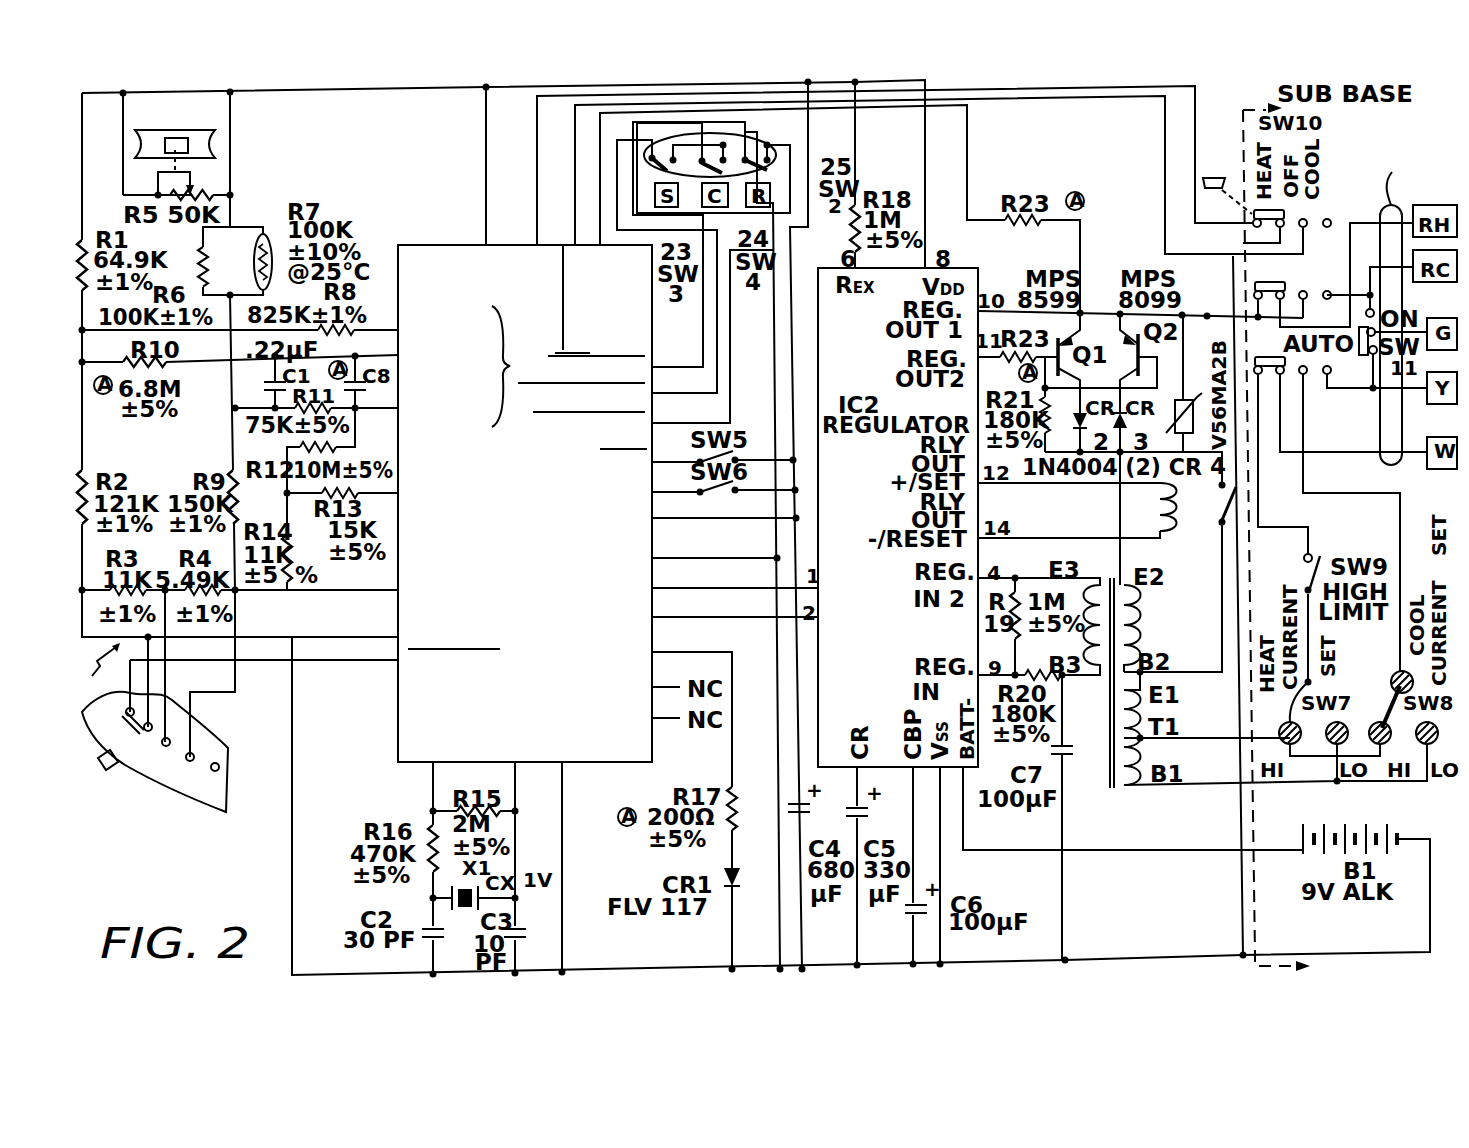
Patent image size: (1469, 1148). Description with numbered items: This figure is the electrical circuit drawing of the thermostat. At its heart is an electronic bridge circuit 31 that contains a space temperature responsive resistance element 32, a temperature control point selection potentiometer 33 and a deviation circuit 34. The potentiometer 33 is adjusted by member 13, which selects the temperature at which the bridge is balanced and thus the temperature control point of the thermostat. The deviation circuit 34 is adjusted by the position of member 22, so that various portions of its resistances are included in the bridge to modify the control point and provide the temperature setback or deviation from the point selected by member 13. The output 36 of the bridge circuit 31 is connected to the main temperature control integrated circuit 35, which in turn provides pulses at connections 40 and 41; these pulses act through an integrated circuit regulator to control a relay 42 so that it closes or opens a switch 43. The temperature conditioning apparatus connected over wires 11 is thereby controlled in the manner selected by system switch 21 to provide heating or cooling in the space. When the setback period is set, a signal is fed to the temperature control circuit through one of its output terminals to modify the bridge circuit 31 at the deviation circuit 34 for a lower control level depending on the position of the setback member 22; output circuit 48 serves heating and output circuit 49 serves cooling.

The wires 11 is at (1404, 314).
The member 13 is at (177, 142).
The system switch 21 is at (1214, 178).
The member 22 is at (155, 752).
The electronic bridge circuit 31 is at (172, 459).
The space temperature responsive resistance element 32 is at (266, 240).
The temperature control point selection potentiometer 33 is at (200, 190).
The deviation circuit 34 is at (101, 665).
The main temperature control integrated circuit 35 is at (548, 470).
The output 36 is at (517, 366).
The connection 40 is at (803, 588).
The connection 41 is at (803, 620).
The relay 42 is at (1170, 530).
The switch 43 is at (1234, 502).
The output circuit 48 is at (368, 590).
The output circuit 49 is at (353, 634).